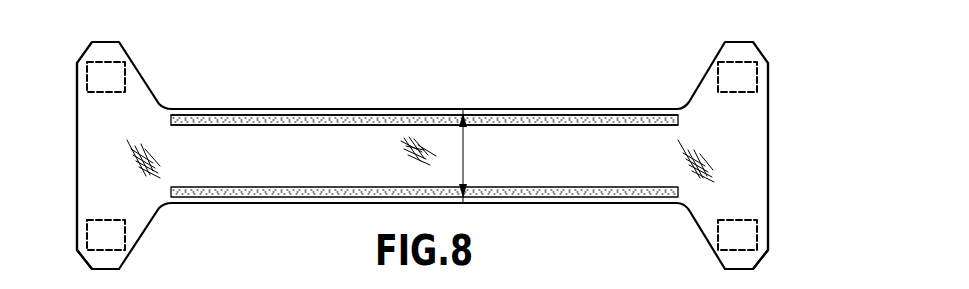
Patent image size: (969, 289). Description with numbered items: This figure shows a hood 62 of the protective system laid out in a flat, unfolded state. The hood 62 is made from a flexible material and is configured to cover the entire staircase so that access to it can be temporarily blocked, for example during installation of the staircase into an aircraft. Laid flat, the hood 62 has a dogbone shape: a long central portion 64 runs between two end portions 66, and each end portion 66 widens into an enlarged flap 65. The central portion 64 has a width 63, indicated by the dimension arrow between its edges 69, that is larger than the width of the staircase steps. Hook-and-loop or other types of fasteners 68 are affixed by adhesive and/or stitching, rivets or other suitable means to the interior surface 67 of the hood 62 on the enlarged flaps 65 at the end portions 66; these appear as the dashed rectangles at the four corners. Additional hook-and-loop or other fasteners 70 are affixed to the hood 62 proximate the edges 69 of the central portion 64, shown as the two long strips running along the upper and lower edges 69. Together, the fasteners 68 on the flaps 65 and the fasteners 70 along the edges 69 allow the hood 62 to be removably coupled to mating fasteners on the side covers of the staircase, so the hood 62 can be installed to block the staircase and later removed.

The hood 62 is at (507, 98).
The width 63 is at (461, 143).
The central portion 64 is at (323, 145).
The enlarged flaps 65 is at (83, 186).
The end portions 66 is at (83, 130).
The interior surface 67 is at (244, 164).
The fasteners 68 is at (97, 77).
The edges 69 is at (390, 107).
The fasteners 70 is at (222, 120).